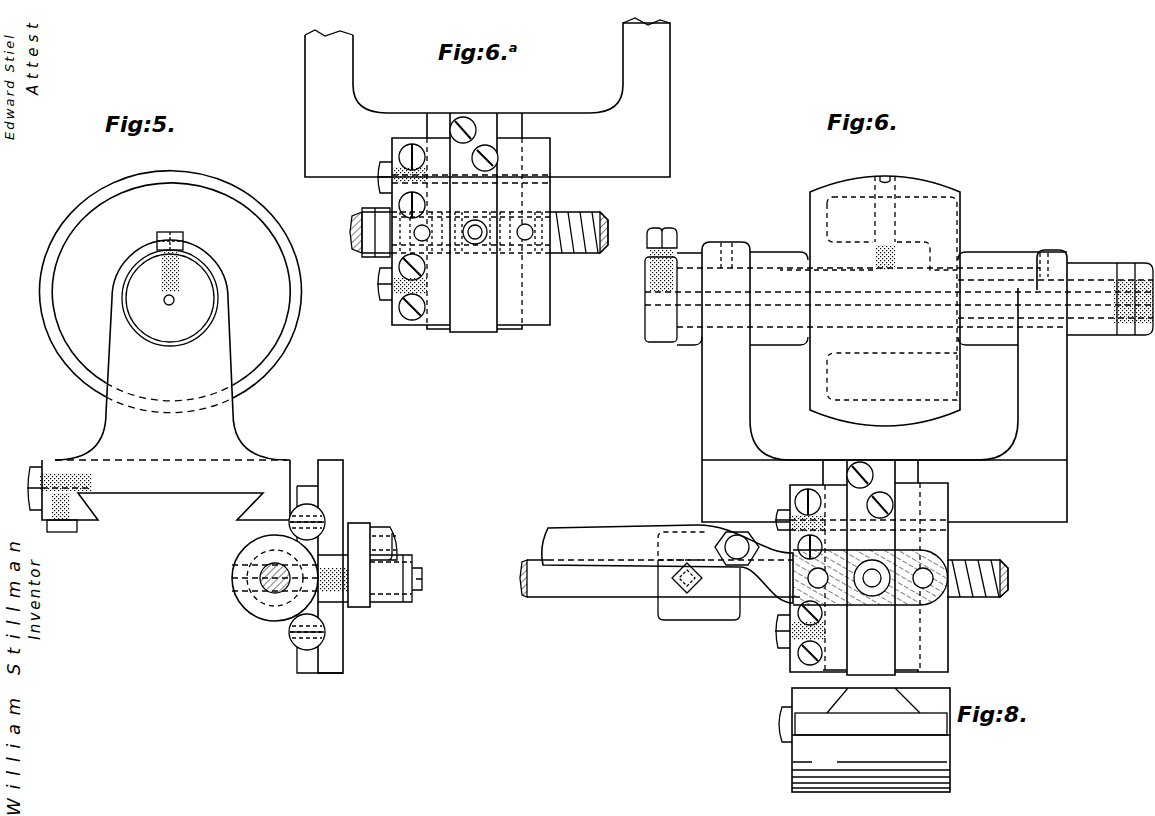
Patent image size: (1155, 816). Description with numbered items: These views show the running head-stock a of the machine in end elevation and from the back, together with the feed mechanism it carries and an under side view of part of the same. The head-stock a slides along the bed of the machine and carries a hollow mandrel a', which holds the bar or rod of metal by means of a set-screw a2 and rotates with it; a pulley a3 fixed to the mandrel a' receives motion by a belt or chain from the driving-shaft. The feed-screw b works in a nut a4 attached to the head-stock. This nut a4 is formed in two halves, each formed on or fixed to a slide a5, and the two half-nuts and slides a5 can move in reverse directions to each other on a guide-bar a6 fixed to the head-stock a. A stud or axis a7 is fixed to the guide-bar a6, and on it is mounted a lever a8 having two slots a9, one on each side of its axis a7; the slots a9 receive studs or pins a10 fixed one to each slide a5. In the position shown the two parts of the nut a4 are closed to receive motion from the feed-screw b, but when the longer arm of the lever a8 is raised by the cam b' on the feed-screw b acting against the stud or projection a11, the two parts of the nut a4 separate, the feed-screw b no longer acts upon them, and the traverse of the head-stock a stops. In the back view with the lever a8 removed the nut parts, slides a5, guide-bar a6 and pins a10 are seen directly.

In FIG. 5, the running head-stock a is at (158, 386).
In FIG. 6A, the running head-stock a is at (487, 97).
In FIG. 6, the running head-stock a is at (884, 382).
In FIG. 5, the hollow mandrel a' is at (170, 298).
In FIG. 6, the hollow mandrel a' is at (899, 298).
In FIG. 5, the set-screw a2 is at (185, 241).
In FIG. 6, the set-screw a2 is at (662, 252).
In FIG. 5, the pulley a3 is at (170, 292).
In FIG. 6, the pulley a3 is at (870, 301).
In FIG. 5, the nut a4 is at (275, 578).
In FIG. 8, the nut a4 is at (864, 740).
In FIG. 5, the slide a5 is at (316, 579).
In FIG. 6A, the slide a5 is at (463, 221).
In FIG. 6, the slide a5 is at (861, 567).
In FIG. 8, the slide a5 is at (871, 724).
In FIG. 5, the guide-bar a6 is at (343, 470).
In FIG. 6A, the guide-bar a6 is at (474, 222).
In FIG. 6, the guide-bar a6 is at (871, 567).
In FIG. 8, the guide-bar a6 is at (873, 700).
In FIG. 5, the stud or axis a7 is at (422, 579).
In FIG. 6A, the stud or axis a7 is at (478, 220).
In FIG. 6, the stud or axis a7 is at (872, 570).
In FIG. 5, the lever a8 is at (370, 578).
In FIG. 6, the lever a8 is at (667, 564).
In FIG. 6, the slots a9 is at (812, 578).
In FIG. 6A, the studs or pins a10 is at (426, 229).
In FIG. 6, the studs or pins a10 is at (820, 585).
In FIG. 5, the stud or projection a11 is at (338, 556).
In FIG. 6, the stud or projection a11 is at (737, 548).
In FIG. 5, the feed-screw b is at (268, 588).
In FIG. 6A, the feed-screw b is at (486, 232).
In FIG. 6, the feed-screw b is at (771, 578).
In FIG. 6, the cam b' is at (699, 576).